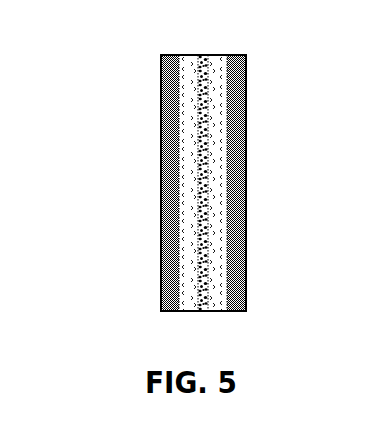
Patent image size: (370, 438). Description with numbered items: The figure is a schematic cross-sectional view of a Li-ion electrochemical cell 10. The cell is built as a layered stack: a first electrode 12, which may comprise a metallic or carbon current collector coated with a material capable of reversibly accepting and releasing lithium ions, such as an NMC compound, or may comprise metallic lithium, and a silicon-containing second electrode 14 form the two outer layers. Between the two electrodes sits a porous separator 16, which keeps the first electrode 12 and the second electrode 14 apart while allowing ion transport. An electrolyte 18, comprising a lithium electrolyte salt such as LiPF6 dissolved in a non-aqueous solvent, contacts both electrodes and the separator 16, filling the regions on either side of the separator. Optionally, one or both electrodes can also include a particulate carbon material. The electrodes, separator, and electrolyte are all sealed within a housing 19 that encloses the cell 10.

The Li-ion electrochemical cell 10 is at (121, 75).
The first electrode 12 is at (161, 109).
The second electrode 14 is at (247, 92).
The porous separator 16 is at (210, 304).
The electrolyte 18 is at (183, 172).
The housing 19 is at (220, 55).